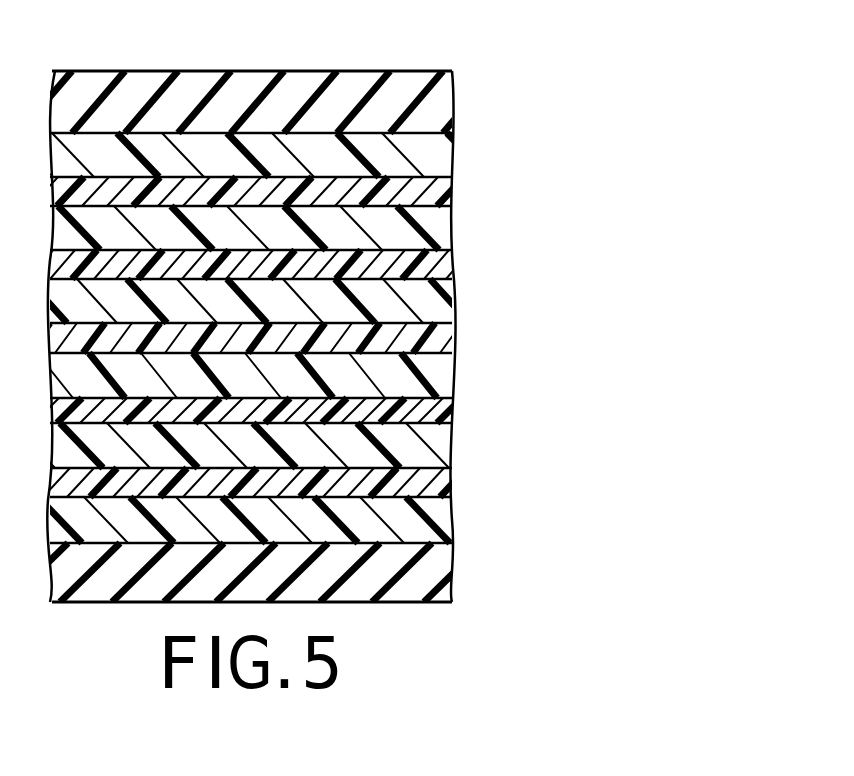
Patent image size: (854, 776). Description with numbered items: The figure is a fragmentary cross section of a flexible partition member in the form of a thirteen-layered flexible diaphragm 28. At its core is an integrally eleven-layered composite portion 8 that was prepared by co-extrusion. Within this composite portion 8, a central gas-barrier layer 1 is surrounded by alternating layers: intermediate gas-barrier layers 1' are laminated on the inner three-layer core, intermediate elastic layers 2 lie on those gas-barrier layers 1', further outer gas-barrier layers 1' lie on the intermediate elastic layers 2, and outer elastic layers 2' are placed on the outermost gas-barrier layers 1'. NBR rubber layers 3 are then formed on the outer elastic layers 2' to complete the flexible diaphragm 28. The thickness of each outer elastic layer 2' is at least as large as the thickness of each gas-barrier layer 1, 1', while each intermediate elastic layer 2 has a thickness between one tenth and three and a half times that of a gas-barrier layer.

The flexible diaphragm 28 is at (612, 92).
The eleven-layered composite portion 8 is at (528, 130).
The NBR rubber layer 3 is at (440, 103).
The outer elastic layer 2' is at (259, 344).
The intermediate elastic layer 2 is at (254, 343).
The gas-barrier layer 1' is at (261, 343).
The gas-barrier layer 1 is at (268, 344).